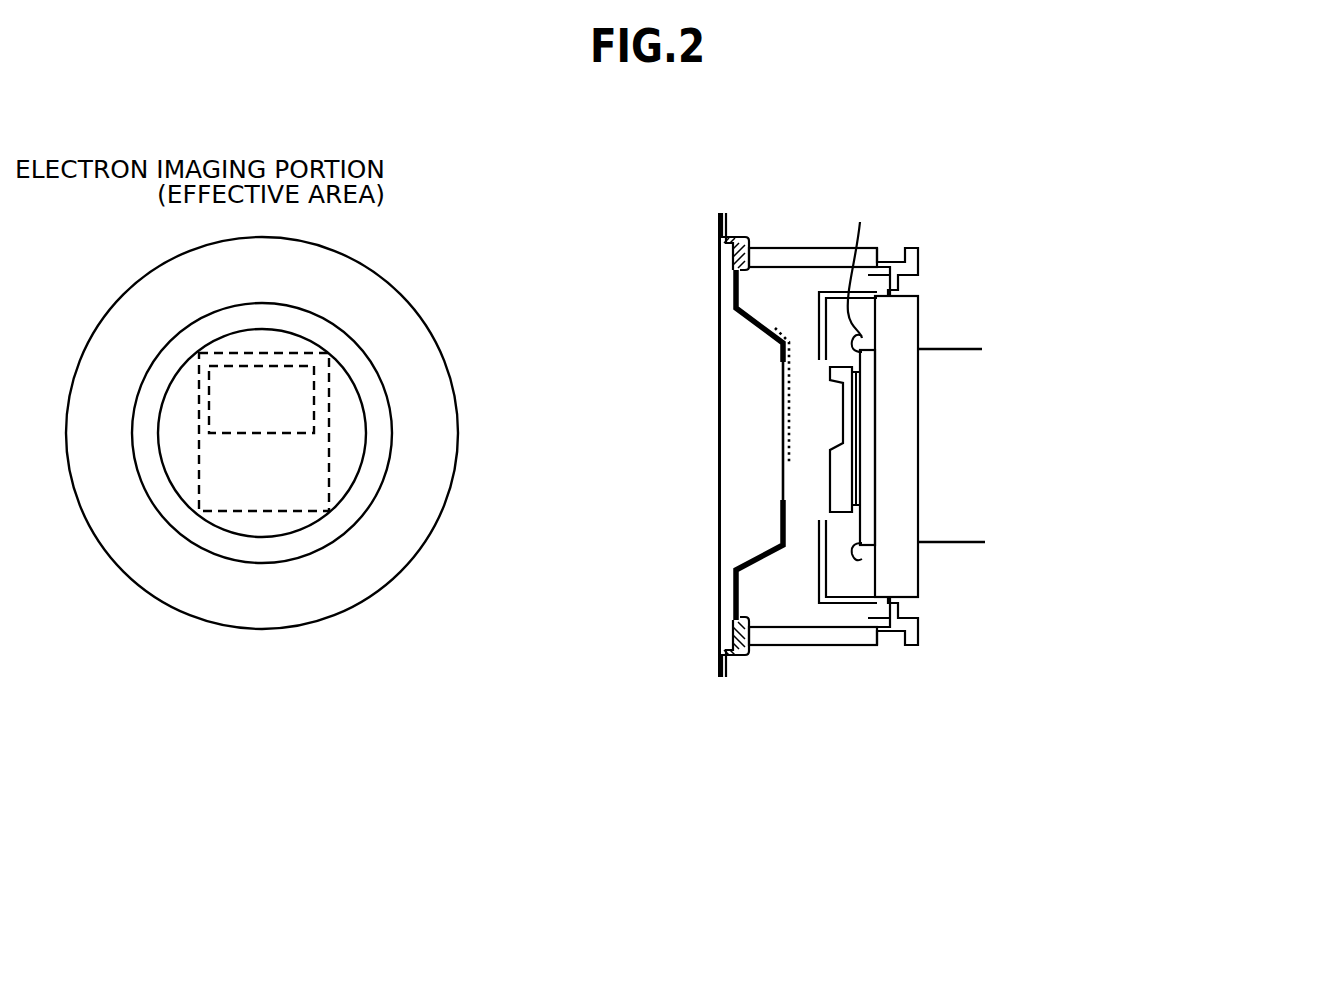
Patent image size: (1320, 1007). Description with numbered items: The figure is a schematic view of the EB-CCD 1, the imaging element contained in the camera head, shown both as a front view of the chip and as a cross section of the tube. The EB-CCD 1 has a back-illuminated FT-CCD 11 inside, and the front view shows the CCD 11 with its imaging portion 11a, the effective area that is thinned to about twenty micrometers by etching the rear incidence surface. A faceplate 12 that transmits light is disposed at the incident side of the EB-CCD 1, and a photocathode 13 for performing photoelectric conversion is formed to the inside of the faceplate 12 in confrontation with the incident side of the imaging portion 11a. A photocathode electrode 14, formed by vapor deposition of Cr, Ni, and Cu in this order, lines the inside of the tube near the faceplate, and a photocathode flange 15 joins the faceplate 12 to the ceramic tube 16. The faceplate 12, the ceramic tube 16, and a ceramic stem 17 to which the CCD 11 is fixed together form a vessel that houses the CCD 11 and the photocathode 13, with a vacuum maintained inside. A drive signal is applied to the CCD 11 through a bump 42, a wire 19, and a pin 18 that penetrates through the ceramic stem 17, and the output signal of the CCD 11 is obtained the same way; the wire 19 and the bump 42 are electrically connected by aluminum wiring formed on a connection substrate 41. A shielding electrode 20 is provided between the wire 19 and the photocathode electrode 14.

The EB-CCD 1 is at (960, 246).
The FT-CCD 11 is at (260, 512).
The imaging portion 11a is at (283, 366).
The faceplate 12 is at (716, 522).
The photocathode 13 is at (778, 396).
The photocathode electrode 14 is at (770, 557).
The photocathode flange 15 is at (722, 213).
The ceramic tube 16 is at (803, 248).
The ceramic stem 17 is at (905, 326).
The pin 18 is at (948, 350).
The wire 19 is at (860, 222).
The shielding electrode 20 is at (838, 605).
The connection substrate 41 is at (870, 432).
The bump 42 is at (855, 505).